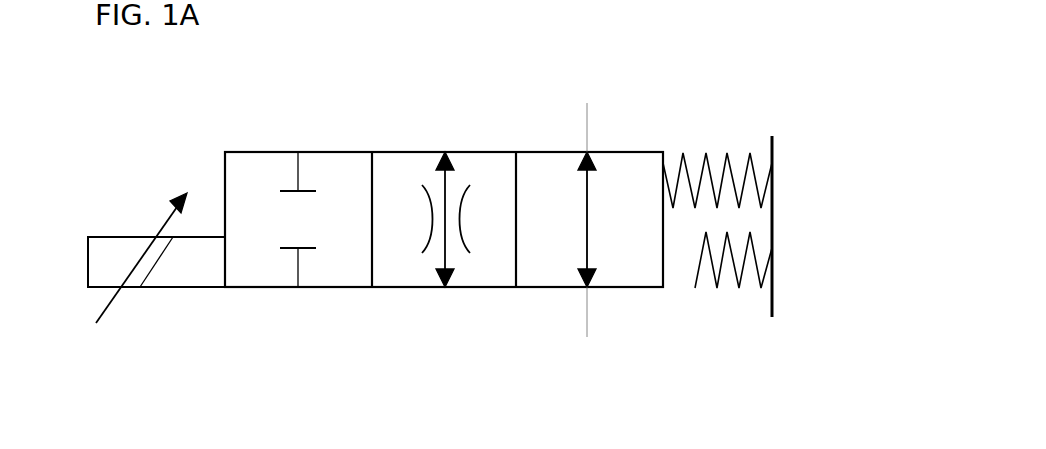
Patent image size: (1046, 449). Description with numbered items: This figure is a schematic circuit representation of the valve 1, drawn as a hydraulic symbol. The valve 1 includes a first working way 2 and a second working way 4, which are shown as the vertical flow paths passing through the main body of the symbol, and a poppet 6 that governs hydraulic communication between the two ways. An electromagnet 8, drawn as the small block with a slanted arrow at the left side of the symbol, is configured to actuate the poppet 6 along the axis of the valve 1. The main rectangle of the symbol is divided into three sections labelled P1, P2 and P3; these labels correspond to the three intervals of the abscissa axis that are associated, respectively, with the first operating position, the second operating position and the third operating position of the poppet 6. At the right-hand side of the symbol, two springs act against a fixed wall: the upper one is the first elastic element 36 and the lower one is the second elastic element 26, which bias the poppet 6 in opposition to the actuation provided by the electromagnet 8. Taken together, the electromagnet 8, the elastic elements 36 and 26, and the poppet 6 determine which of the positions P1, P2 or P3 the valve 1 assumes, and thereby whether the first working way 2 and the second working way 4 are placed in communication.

The valve 1 is at (130, 140).
The electromagnet 8 is at (187, 273).
The poppet 6 is at (274, 288).
The third interval P3 is at (323, 151).
The second interval P2 is at (412, 152).
The first interval P1 is at (548, 152).
The first working way 2 is at (588, 288).
The second working way 4 is at (588, 151).
The first elastic element 36 is at (707, 157).
The second elastic element 26 is at (727, 277).